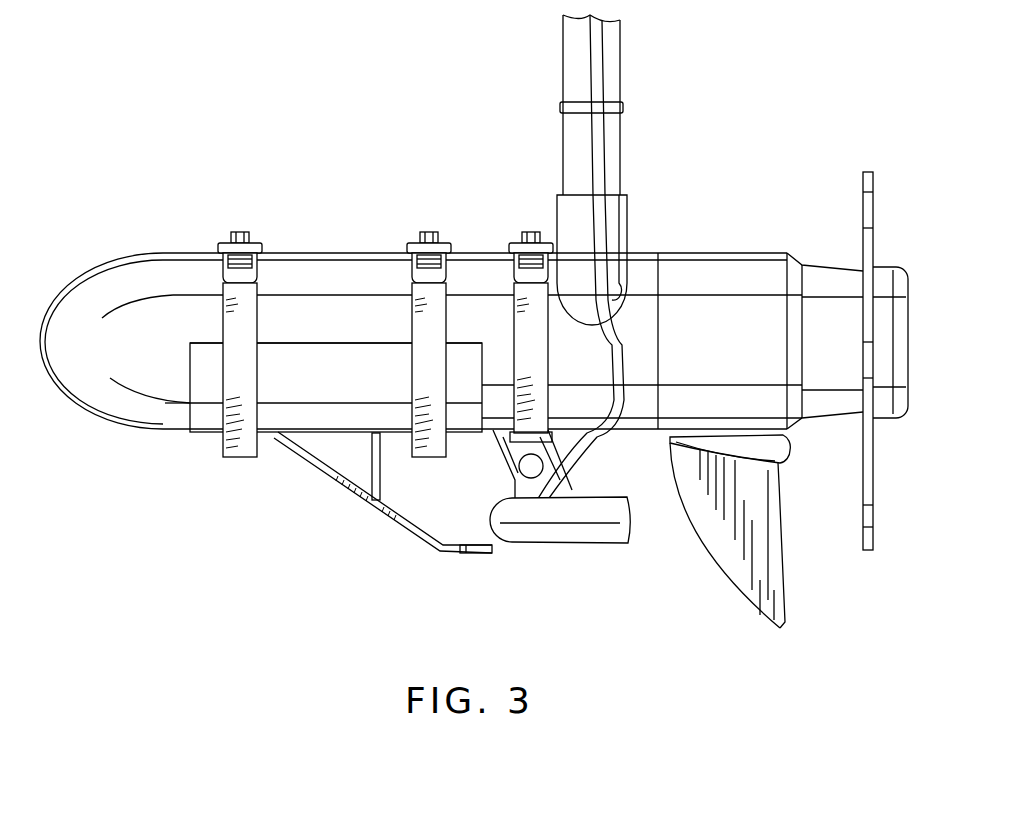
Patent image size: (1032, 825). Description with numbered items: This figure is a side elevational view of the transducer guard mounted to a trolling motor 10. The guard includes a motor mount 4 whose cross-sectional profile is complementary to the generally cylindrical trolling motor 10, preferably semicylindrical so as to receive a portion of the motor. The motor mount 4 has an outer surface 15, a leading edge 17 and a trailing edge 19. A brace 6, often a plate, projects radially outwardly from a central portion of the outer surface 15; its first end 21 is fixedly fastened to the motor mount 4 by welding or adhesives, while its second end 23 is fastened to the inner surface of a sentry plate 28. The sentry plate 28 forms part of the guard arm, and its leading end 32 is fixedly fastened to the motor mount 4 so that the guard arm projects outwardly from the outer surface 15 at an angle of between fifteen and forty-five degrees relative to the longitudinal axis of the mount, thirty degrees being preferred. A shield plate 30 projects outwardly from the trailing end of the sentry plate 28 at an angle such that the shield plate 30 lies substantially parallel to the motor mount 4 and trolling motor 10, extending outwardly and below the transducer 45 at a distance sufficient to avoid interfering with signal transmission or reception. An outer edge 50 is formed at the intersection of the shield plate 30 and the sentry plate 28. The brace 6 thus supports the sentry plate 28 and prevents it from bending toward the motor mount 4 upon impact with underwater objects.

The trolling motor 10 is at (118, 268).
The motor mount 4 is at (348, 336).
The outer surface 15 is at (350, 399).
The leading edge 17 is at (190, 387).
The trailing edge 19 is at (487, 357).
The first end 21 is at (370, 435).
The leading end 32 is at (277, 437).
The brace 6 is at (392, 470).
The second end 23 is at (398, 522).
The sentry plate 28 is at (418, 541).
The shield plate 30 is at (473, 557).
The outer edge 50 is at (451, 563).
The transducer 45 is at (574, 555).